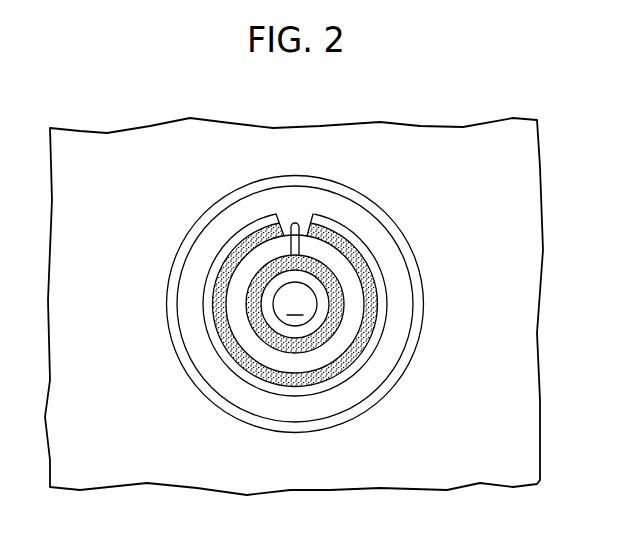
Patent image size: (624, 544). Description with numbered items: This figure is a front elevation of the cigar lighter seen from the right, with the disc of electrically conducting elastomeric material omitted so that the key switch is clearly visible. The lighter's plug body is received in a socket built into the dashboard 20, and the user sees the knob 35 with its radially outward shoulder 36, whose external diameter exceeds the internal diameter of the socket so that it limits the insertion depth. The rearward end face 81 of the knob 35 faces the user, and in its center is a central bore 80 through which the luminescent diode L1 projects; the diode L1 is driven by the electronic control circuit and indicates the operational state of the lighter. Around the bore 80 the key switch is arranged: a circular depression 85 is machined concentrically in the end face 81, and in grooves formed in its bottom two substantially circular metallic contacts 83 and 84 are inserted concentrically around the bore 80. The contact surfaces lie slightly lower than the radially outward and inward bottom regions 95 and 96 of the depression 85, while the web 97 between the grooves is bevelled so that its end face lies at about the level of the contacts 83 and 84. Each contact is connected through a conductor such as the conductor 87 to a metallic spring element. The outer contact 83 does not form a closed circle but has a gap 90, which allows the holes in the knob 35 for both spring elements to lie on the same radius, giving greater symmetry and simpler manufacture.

The dashboard 20 is at (491, 178).
The knob 35 is at (298, 289).
The radially outward shoulder 36 is at (362, 194).
The end face 81 is at (229, 238).
The circular depression 85 is at (241, 279).
The outer metallic contact 83 is at (382, 302).
The conductor 87 is at (300, 224).
The radially outward bottom region 95 is at (393, 250).
The gap 90 is at (284, 223).
The inner metallic contact 84 is at (327, 335).
The web 97 is at (352, 327).
The radially inward bottom region 96 is at (287, 334).
The central bore 80 is at (254, 325).
The luminescent diode L1 is at (277, 309).